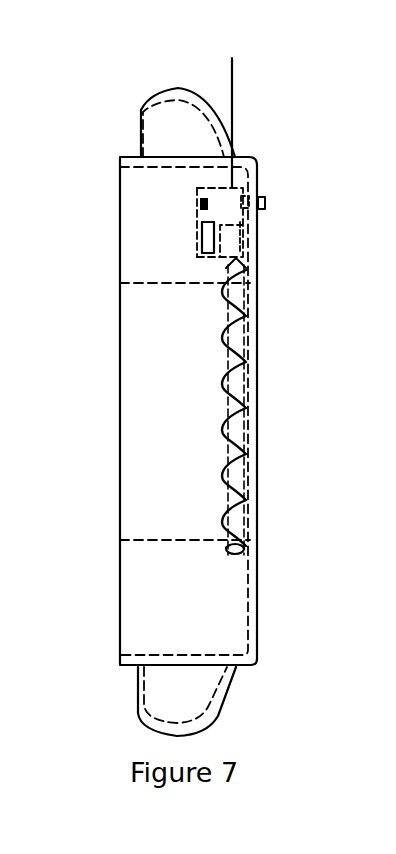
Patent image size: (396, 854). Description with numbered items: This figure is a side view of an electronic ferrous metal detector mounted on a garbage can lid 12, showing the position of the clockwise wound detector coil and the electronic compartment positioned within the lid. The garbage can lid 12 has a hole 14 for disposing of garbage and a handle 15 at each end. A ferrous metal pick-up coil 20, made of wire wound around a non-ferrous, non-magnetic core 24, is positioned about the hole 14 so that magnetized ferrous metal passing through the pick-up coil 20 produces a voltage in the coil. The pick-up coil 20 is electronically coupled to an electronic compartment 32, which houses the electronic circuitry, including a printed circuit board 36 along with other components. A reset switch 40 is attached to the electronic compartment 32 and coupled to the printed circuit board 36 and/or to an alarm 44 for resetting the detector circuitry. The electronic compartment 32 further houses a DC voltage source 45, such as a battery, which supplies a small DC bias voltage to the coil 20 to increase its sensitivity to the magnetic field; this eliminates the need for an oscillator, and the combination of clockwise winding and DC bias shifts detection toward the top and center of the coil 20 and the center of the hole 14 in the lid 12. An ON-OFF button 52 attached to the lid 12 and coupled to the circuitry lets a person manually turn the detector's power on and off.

The garbage can lid 12 is at (258, 603).
The hole 14 is at (180, 395).
The handle 15 is at (140, 110).
The pick-up coil 20 is at (247, 465).
The non-ferrous, non-magnetic core 24 is at (245, 335).
The electronic compartment 32 is at (227, 136).
The printed circuit board 36 is at (243, 237).
The reset switch 40 is at (265, 200).
The alarm 44 is at (240, 262).
The DC voltage source 45 is at (202, 238).
The ON-OFF button 52 is at (200, 203).